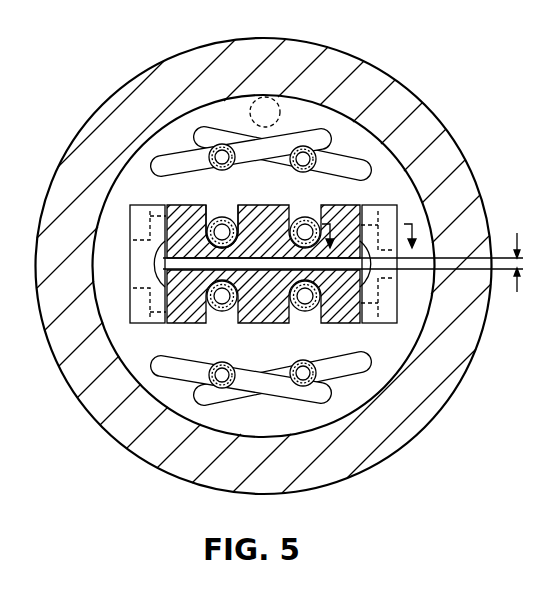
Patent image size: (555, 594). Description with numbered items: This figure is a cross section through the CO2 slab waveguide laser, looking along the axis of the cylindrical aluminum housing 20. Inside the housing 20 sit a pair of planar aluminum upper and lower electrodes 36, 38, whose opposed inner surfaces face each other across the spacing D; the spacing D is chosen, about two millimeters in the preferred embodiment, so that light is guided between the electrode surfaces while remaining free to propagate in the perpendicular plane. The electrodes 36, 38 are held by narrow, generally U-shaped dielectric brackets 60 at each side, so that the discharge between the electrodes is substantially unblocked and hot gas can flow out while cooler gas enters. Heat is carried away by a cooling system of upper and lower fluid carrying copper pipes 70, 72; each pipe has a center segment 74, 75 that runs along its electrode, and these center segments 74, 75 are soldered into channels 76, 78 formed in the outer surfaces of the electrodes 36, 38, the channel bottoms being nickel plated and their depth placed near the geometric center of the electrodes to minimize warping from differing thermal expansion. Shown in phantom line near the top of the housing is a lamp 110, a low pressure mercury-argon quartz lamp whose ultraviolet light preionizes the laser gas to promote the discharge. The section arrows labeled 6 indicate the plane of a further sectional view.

The cylindrical aluminum housing 20 is at (400, 88).
The lamp 110 is at (273, 98).
The upper fluid carrying copper pipe 70 is at (195, 130).
The lower fluid carrying copper pipe 72 is at (240, 400).
The dielectric brackets 60 is at (400, 204).
The upper electrode 36 is at (270, 206).
The lower electrode 38 is at (245, 323).
The channel 76 is at (220, 213).
The center segment 74 is at (222, 216).
The channel 78 is at (218, 312).
The center segment 75 is at (307, 312).
The section line 6- 6 is at (374, 241).
The spacing D is at (517, 279).